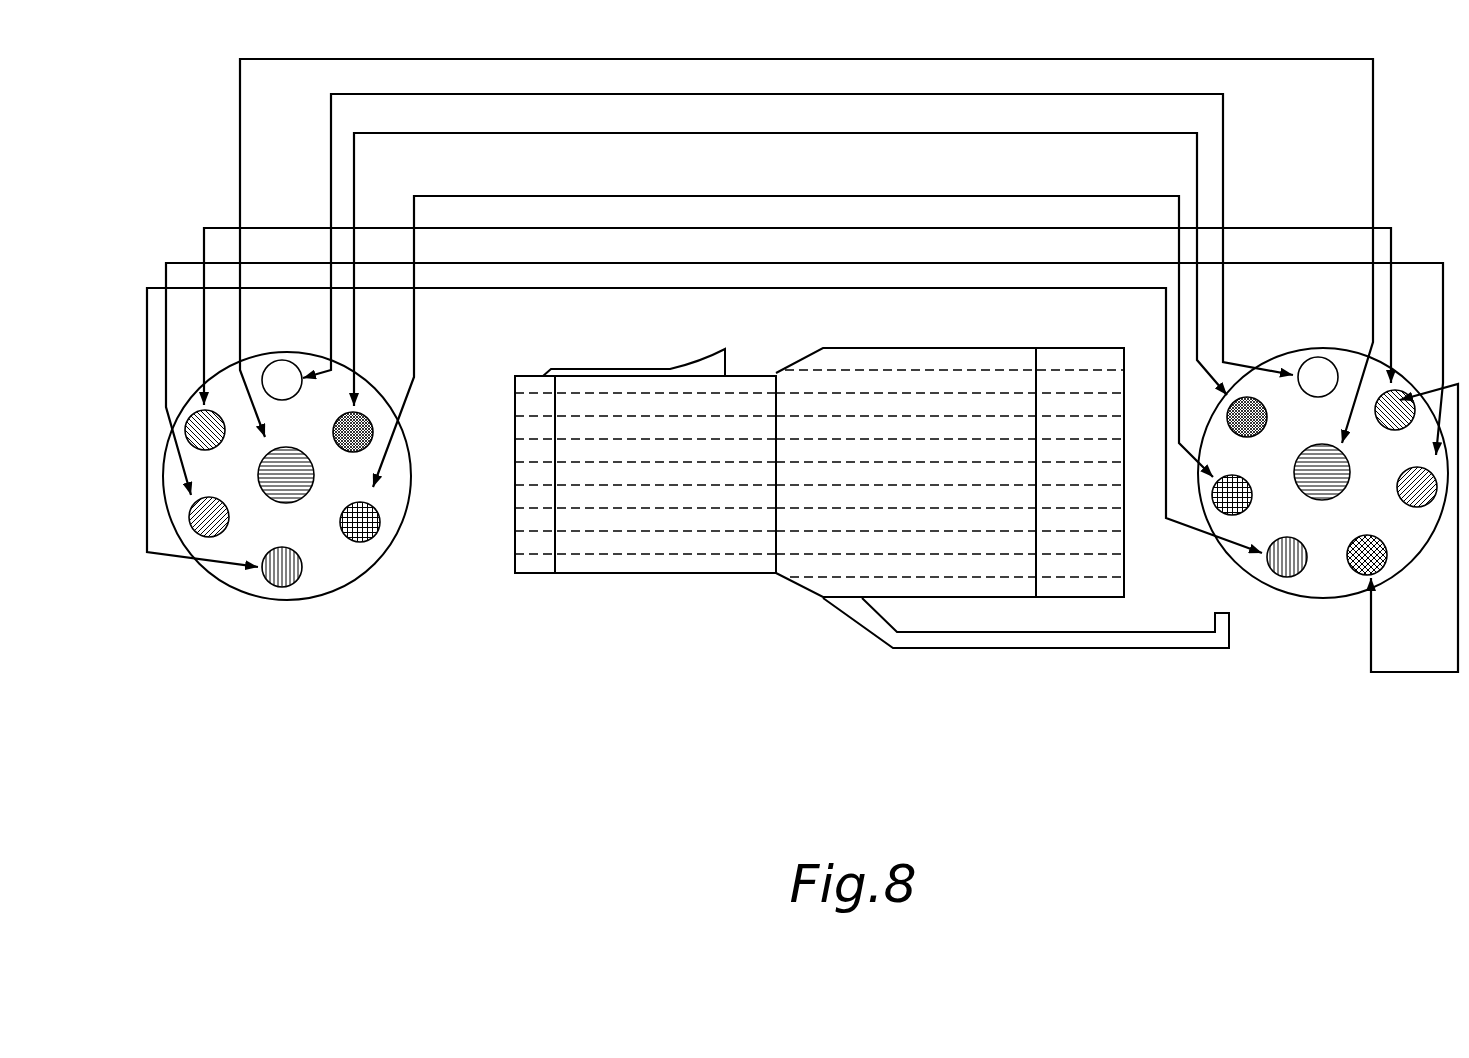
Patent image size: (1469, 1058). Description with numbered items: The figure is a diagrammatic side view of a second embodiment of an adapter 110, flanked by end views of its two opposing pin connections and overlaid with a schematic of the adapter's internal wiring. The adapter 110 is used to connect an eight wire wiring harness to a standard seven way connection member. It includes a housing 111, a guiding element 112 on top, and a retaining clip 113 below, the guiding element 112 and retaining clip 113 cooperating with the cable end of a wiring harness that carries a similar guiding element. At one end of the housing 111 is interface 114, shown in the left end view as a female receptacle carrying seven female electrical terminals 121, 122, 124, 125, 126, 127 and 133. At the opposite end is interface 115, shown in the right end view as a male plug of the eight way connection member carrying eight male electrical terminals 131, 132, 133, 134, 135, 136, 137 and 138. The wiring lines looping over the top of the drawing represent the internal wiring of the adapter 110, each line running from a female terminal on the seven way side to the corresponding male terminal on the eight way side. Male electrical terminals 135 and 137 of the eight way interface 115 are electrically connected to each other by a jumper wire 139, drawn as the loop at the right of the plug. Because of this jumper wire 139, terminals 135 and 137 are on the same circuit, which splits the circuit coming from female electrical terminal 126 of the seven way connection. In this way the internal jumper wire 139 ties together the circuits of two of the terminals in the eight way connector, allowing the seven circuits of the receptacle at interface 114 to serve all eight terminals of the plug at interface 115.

The adapter 110 is at (706, 624).
The housing 111 is at (592, 578).
The guiding element 112 is at (712, 370).
The retaining clip 113 is at (1022, 642).
The interface 114 is at (513, 455).
The interface 115 is at (1127, 407).
The female electrical terminal 121 is at (280, 362).
The female electrical terminal 122 is at (372, 413).
The female electrical terminal 124 is at (263, 586).
The female electrical terminal 125 is at (230, 509).
The female electrical terminal 126 is at (227, 436).
The female electrical terminal 127 is at (304, 470).
The male electrical terminal 131 is at (1318, 358).
The male electrical terminal 132 is at (1243, 437).
The electrical terminal 133 is at (384, 527).
The male electrical terminal 134 is at (1296, 577).
The male electrical terminal 135 is at (1390, 557).
The male electrical terminal 136 is at (1395, 476).
The male electrical terminal 137 is at (1413, 382).
The male electrical terminal 138 is at (1350, 474).
The jumper wire 139 is at (1407, 672).